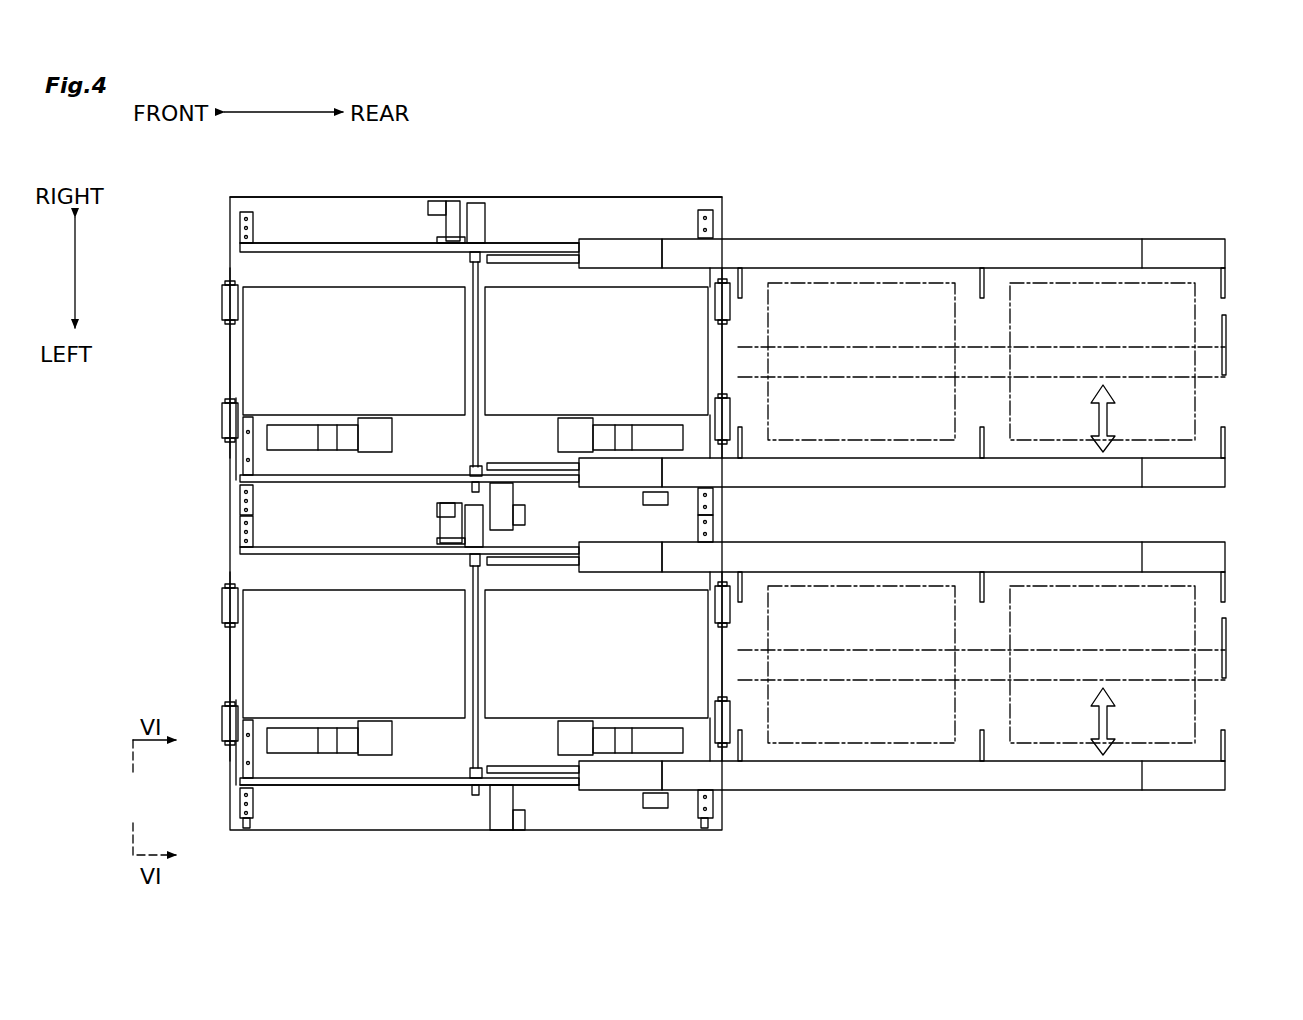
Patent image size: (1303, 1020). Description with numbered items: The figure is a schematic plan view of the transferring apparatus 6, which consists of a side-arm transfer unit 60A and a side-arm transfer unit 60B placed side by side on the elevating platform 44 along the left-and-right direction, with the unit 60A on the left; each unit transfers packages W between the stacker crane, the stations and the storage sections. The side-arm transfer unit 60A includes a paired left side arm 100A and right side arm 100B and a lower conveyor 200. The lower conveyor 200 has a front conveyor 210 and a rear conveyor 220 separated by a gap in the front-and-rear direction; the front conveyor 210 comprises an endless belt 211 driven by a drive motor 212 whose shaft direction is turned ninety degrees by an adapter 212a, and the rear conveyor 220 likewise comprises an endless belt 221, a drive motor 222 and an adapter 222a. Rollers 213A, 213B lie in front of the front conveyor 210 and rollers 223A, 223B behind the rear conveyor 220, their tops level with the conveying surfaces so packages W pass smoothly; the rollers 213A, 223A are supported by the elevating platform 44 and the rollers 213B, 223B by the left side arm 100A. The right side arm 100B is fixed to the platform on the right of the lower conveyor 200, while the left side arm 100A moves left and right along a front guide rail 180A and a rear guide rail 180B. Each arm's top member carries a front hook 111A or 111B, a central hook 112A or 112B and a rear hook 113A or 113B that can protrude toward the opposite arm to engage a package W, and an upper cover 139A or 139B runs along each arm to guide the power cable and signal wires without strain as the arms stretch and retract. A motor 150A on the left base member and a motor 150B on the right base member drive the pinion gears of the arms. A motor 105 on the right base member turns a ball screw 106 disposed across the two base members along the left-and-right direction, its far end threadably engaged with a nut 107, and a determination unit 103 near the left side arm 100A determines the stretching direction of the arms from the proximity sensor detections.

The transferring apparatus 6 is at (655, 222).
The elevating platform 44 is at (606, 196).
The package W is at (865, 282).
The upper cover 139B is at (932, 245).
The upper cover 139A is at (1072, 486).
The front hook 111B is at (702, 262).
The front hook 111A is at (705, 488).
The central hook 112B is at (984, 285).
The central hook 112A is at (984, 442).
The rear hook 113B is at (1228, 288).
The rear hook 113A is at (1228, 436).
The rear guide rail 180B is at (742, 448).
The front guide rail 180A is at (238, 450).
The right side arm 100B is at (346, 242).
The left side arm 100A is at (350, 488).
The side-arm transfer unit 60B is at (522, 240).
The side-arm transfer unit 60A is at (396, 788).
The motor 105 is at (476, 202).
The ball screw 106 is at (470, 262).
The nut 107 is at (469, 470).
The motor 150B is at (445, 203).
The motor 150A is at (514, 515).
The determination unit 103 is at (655, 506).
The lower conveyor 200 is at (264, 285).
The front conveyor 210 is at (285, 335).
The endless belt 211 is at (282, 362).
The drive motor 212 is at (304, 440).
The adapter 212a is at (375, 432).
The roller 213A is at (226, 300).
The roller 213B is at (226, 420).
The rear conveyor 220 is at (690, 345).
The endless belt 221 is at (670, 383).
The drive motor 222 is at (650, 437).
The adapter 222a is at (578, 432).
The roller 223A is at (726, 305).
The roller 223B is at (726, 418).